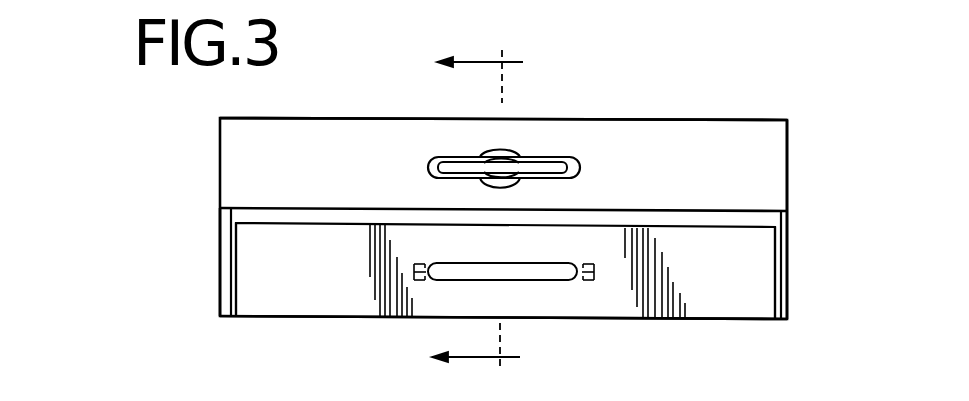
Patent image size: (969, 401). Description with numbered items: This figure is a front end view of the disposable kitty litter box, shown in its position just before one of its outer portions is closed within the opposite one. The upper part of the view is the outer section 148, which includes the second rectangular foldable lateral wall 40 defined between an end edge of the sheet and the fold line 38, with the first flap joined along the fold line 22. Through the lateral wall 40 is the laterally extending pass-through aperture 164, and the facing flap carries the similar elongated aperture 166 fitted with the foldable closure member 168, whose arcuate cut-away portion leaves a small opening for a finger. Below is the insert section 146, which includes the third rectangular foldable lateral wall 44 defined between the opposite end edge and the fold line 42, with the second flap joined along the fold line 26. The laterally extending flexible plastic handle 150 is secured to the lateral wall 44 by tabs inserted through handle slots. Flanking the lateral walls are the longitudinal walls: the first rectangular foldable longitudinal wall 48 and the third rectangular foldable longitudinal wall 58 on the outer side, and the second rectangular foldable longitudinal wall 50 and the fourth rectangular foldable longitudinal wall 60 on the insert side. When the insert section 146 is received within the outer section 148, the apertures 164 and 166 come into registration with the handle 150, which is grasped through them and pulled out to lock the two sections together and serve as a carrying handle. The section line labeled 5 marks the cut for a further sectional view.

The outer section 148 is at (316, 118).
The fold line 38 is at (682, 120).
The second rectangular foldable lateral wall 40 is at (755, 167).
The fold line 22 is at (343, 212).
The aperture 166 is at (493, 172).
The closure member 168 is at (515, 157).
The pass-through aperture 164 is at (578, 169).
The first rectangular foldable longitudinal wall 48 is at (221, 272).
The second rectangular foldable longitudinal wall 50 is at (236, 257).
The fold line 26 is at (397, 224).
The fourth rectangular foldable longitudinal wall 60 is at (775, 288).
The third rectangular foldable longitudinal wall 58 is at (787, 253).
The flexible plastic handle 150 is at (445, 281).
The fold line 42 is at (356, 317).
The insert section 146 is at (632, 320).
The third rectangular foldable lateral wall 44 is at (737, 300).
The section line 5- 5 is at (477, 211).